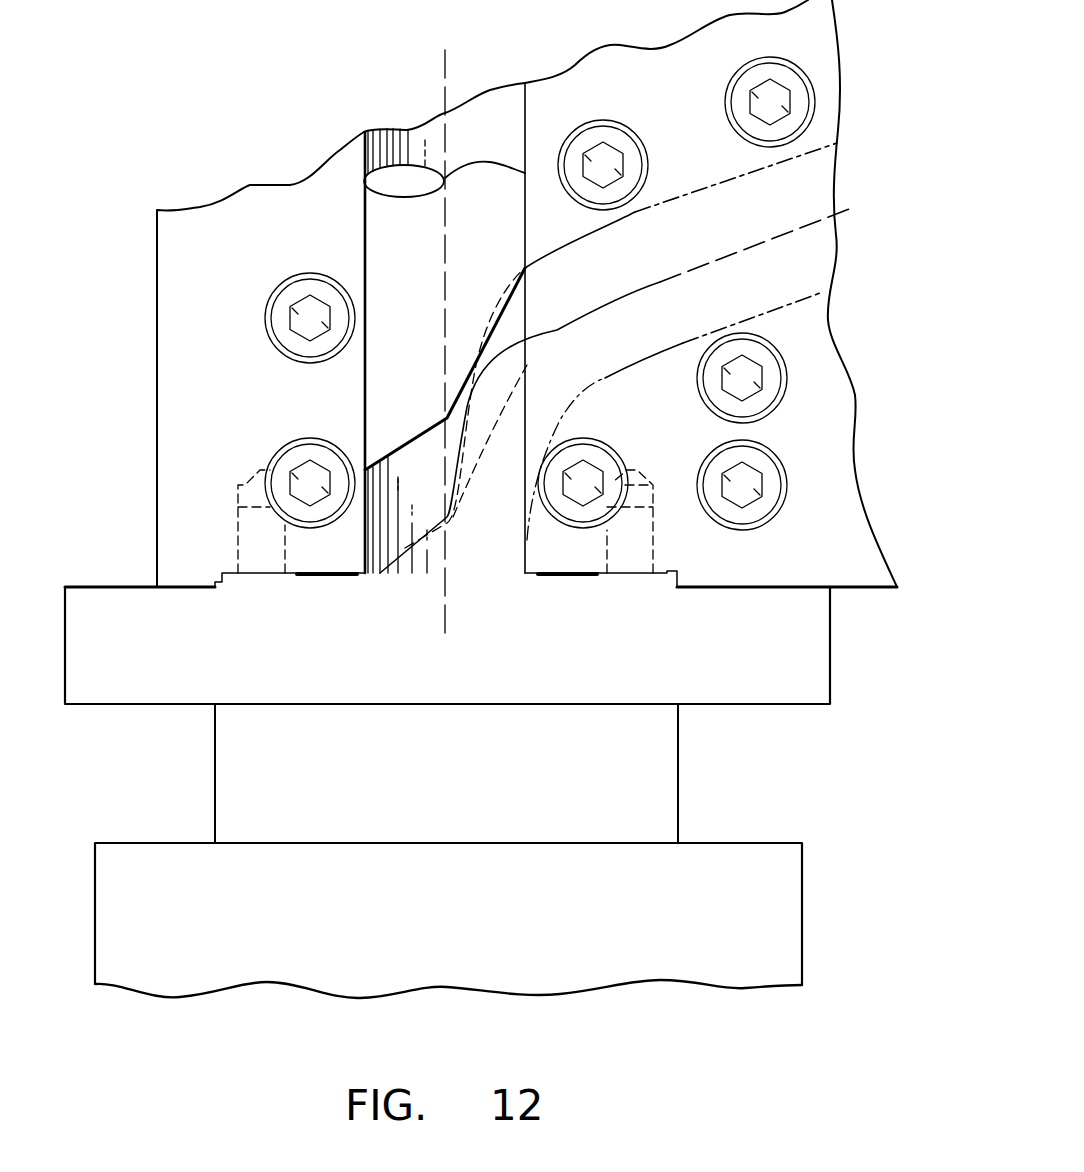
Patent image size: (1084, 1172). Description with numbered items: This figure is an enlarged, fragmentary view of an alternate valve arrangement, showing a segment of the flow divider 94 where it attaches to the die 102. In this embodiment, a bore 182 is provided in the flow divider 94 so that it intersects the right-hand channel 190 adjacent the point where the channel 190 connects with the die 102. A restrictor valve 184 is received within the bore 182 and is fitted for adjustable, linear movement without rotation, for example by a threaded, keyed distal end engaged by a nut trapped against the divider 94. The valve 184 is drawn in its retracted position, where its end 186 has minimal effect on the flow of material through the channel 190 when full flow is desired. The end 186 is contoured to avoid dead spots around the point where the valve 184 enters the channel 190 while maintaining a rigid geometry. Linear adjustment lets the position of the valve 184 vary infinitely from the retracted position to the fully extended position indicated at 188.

The flow divider 94 is at (223, 284).
The die 102 is at (478, 931).
The bore 182 is at (523, 100).
The restrictor valve 184 is at (388, 232).
The end 186 is at (402, 456).
The fully extended position 188 is at (521, 374).
The right-hand channel 190 is at (793, 266).